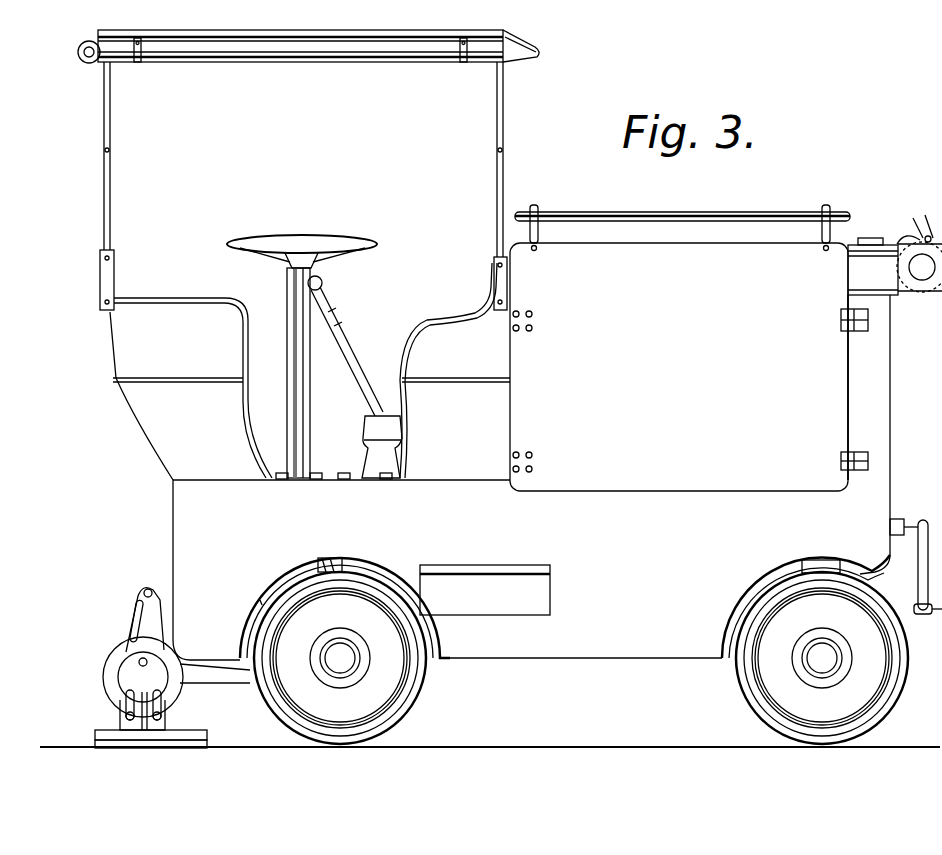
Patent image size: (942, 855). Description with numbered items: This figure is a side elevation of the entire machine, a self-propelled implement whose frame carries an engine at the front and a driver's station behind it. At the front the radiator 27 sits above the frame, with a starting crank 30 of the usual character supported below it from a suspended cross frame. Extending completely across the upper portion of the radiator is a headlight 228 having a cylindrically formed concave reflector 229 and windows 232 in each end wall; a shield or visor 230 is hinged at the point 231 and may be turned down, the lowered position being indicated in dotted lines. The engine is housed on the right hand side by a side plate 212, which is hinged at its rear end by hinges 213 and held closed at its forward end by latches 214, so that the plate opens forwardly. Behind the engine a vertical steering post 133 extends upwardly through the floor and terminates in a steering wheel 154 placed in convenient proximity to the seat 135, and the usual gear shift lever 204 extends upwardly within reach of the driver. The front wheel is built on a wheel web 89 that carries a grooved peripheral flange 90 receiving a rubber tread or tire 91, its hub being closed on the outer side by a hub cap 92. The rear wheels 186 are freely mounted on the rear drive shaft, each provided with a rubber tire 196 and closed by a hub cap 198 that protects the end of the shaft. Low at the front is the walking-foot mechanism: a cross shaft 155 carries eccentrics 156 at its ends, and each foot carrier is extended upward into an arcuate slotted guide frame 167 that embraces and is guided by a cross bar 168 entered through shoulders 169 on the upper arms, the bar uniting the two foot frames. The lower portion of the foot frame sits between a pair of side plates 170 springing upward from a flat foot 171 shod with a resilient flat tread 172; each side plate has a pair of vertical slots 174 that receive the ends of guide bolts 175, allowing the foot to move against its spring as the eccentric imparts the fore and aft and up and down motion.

The radiator 27 is at (850, 368).
The starting crank 30 is at (890, 515).
The wheel web 89 is at (783, 678).
The grooved peripheral flange 90 is at (785, 722).
The rubber tread or tire 91 is at (762, 712).
The hub cap 92 is at (815, 657).
The vertical steering post 133 is at (305, 405).
The seat 135 is at (191, 389).
The steering wheel 154 is at (345, 250).
The cross shaft 155 is at (138, 661).
The eccentric 156 is at (125, 678).
The slotted guide frame 167 is at (140, 605).
The cross bar 168 is at (145, 592).
The shoulder 169 is at (135, 622).
The side plate 170 is at (123, 723).
The flat foot 171 is at (185, 730).
The flat tread 172 is at (207, 742).
The vertical slot 174 is at (162, 700).
The guide bolt 175 is at (127, 715).
The rear wheel 186 is at (340, 658).
The rubber tire 196 is at (423, 693).
The hub cap 198 is at (356, 662).
The gear shift lever 204 is at (352, 348).
The side plate 212 is at (680, 348).
The hinge 213 is at (536, 318).
The latch 214 is at (841, 318).
The headlight 228 is at (900, 276).
The cylindrically formed concave reflector 229 is at (900, 267).
The shield or visor 230 is at (925, 215).
The hinge point 231 is at (913, 218).
The window 232 is at (906, 240).